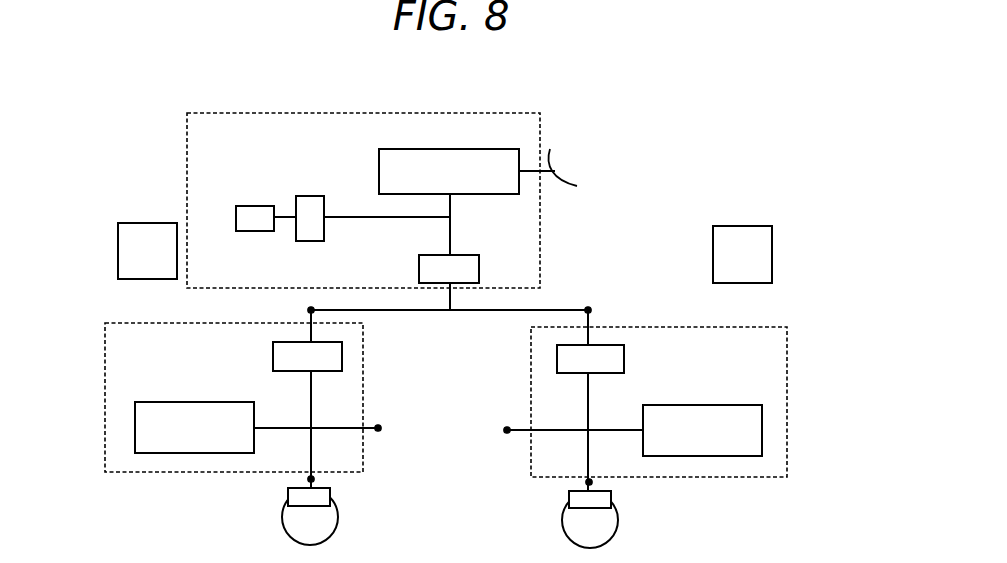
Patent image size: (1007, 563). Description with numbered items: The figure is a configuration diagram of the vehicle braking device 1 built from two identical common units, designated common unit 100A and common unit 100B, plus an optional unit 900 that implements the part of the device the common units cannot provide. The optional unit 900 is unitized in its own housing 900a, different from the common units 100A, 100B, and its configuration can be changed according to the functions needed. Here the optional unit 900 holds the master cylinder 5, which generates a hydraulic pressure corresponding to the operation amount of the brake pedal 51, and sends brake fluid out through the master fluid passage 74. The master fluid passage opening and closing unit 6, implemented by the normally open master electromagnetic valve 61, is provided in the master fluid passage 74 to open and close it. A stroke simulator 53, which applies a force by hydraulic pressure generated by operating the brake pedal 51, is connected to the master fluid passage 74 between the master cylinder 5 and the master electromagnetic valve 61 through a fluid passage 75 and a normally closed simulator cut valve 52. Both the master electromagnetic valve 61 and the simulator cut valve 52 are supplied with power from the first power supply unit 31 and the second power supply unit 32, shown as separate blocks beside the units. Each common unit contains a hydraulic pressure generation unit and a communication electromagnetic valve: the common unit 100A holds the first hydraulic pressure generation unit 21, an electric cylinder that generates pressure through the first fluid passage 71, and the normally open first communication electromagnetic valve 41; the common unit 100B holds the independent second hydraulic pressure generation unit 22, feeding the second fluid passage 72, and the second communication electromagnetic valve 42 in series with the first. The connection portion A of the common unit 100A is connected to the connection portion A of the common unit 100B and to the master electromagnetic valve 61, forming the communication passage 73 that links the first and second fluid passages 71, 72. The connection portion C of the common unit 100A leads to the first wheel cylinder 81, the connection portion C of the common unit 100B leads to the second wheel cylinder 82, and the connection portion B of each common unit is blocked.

The vehicle braking device 1 is at (150, 80).
The optional unit 900 is at (284, 96).
The housing 900a is at (378, 110).
The master cylinder 5 is at (462, 159).
The brake pedal 51 is at (553, 163).
The simulator cut valve 52 is at (326, 204).
The stroke simulator 53 is at (232, 217).
The master fluid passage opening and closing unit 6 is at (468, 263).
The master electromagnetic valve 61 is at (470, 272).
The master fluid passage 74 is at (453, 231).
The fluid passage 75 is at (401, 221).
The first power supply unit 31 is at (138, 230).
The second power supply unit 32 is at (757, 240).
The common unit 100A is at (89, 333).
The common unit 100B is at (776, 315).
The first communication electromagnetic valve 41 is at (340, 363).
The second communication electromagnetic valve 42 is at (563, 360).
The first hydraulic pressure generation unit 21 is at (185, 447).
The second hydraulic pressure generation unit 22 is at (692, 443).
The first fluid passage 71 is at (300, 452).
The second fluid passage 72 is at (593, 458).
The communication passage 73 is at (373, 312).
The first wheel cylinder 81 is at (318, 497).
The second wheel cylinder 82 is at (572, 498).
The connection portion A is at (305, 311).
The connection portion B is at (505, 438).
The connection portion C is at (295, 478).